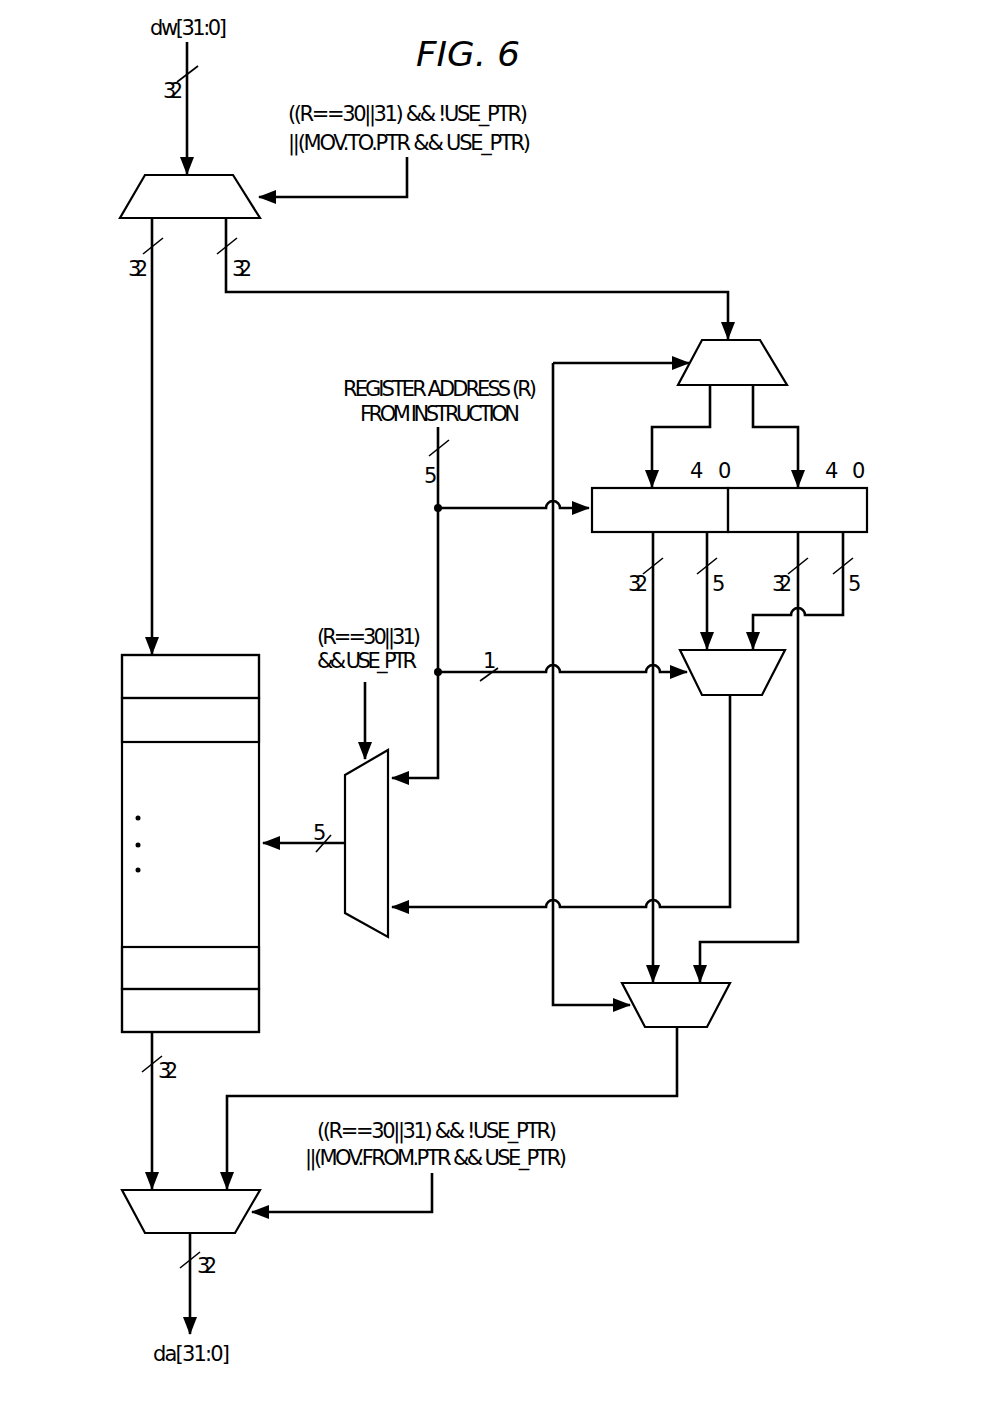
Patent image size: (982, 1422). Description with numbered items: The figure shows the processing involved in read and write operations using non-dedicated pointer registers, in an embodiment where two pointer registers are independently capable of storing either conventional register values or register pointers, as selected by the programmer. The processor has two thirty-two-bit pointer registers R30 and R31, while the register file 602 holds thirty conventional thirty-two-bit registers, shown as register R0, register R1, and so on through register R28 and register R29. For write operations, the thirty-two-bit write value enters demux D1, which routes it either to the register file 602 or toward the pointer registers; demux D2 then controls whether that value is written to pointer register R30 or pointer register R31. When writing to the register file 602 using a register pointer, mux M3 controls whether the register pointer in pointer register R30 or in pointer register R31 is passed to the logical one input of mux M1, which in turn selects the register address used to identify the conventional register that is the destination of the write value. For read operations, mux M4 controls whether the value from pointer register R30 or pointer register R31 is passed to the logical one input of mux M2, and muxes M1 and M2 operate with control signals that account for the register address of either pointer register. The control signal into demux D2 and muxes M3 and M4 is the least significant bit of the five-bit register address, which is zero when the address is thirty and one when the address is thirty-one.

The register file 602 is at (149, 843).
The demux D1 is at (179, 196).
The demux D2 is at (745, 362).
The mux M1 is at (366, 856).
The mux M2 is at (181, 1211).
The mux M3 is at (732, 658).
The mux M4 is at (691, 1005).
The register R0 is at (190, 676).
The register R1 is at (190, 720).
The register R28 is at (190, 968).
The register R29 is at (190, 1010).
The pointer register R30 is at (660, 510).
The pointer register R31 is at (797, 510).